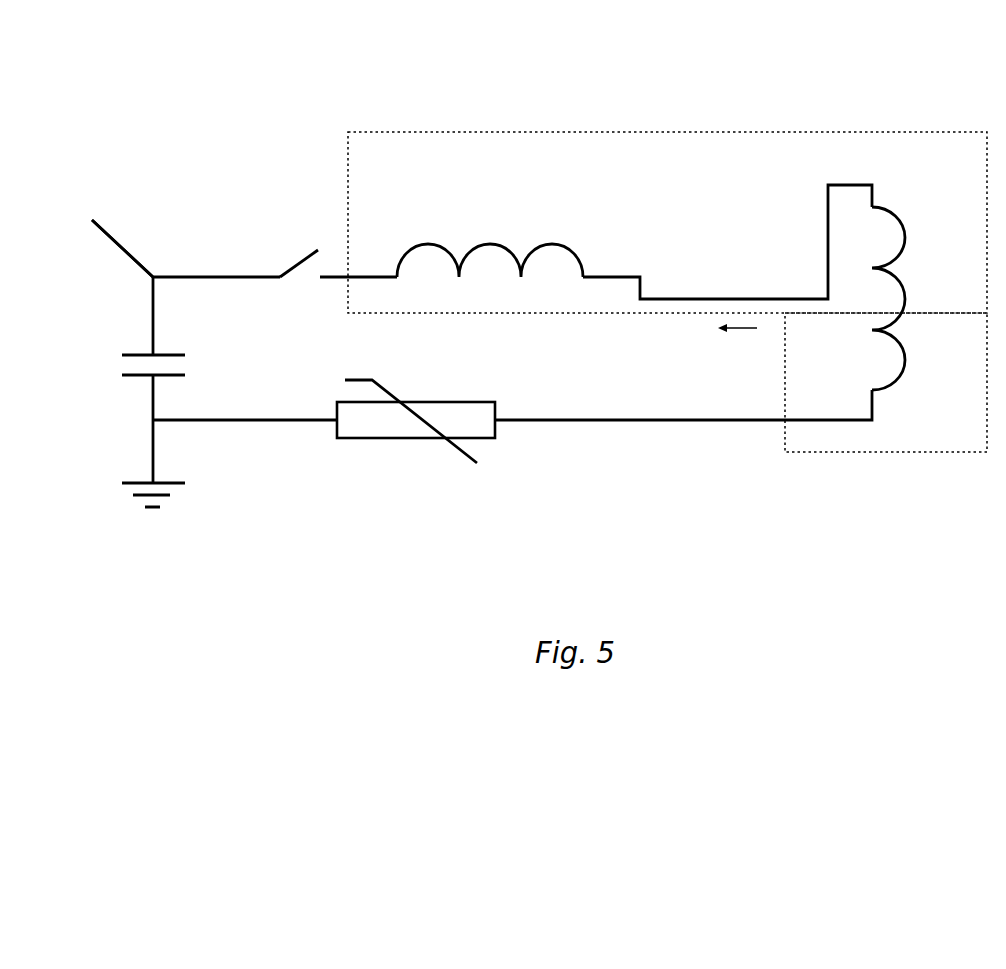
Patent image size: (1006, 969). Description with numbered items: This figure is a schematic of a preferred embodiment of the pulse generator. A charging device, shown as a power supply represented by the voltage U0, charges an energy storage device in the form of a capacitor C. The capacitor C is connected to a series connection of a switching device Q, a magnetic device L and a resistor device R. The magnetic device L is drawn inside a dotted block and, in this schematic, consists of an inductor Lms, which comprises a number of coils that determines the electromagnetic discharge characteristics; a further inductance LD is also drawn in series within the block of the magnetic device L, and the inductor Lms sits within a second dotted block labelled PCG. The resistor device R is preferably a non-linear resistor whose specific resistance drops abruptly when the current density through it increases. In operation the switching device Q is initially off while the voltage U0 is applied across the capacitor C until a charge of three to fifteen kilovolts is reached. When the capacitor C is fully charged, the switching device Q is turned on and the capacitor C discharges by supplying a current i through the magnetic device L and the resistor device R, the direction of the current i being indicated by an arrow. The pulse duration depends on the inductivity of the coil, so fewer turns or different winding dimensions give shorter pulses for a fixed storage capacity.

The voltage U0 is at (120, 230).
The switching device Q is at (297, 252).
The capacitor C is at (145, 350).
The resistor device R is at (416, 408).
The magnetic device L is at (667, 205).
The damping inductor LD is at (490, 246).
The inductor Lms is at (919, 298).
The pulse coil generator PCG is at (886, 409).
The current i is at (737, 342).